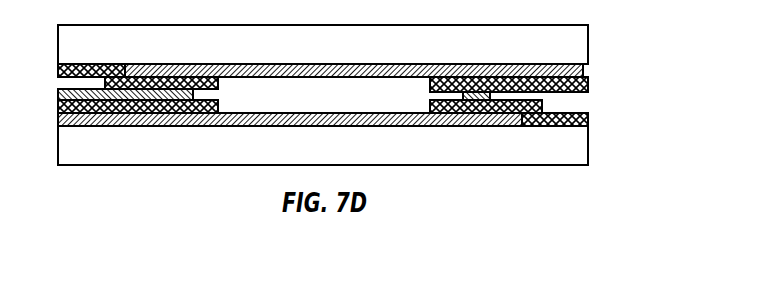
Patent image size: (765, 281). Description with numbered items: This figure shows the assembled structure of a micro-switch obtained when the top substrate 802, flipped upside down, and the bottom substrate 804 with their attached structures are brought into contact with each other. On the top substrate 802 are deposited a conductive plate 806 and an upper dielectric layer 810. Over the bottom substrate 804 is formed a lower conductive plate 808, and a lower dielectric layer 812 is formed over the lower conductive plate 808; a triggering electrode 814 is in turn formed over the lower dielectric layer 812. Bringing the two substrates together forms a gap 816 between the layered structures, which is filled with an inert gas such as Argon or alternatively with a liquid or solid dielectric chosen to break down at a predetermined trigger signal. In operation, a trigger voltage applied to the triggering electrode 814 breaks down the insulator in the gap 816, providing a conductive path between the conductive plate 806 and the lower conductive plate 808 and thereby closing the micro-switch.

The top substrate 802 is at (589, 52).
The bottom substrate 804 is at (589, 157).
The conductive plate 806 is at (589, 72).
The lower conductive plate 808 is at (484, 128).
The upper dielectric layer 810 is at (586, 92).
The lower dielectric layer 812 is at (589, 124).
The triggering electrode 814 is at (505, 90).
The gap 816 is at (345, 98).